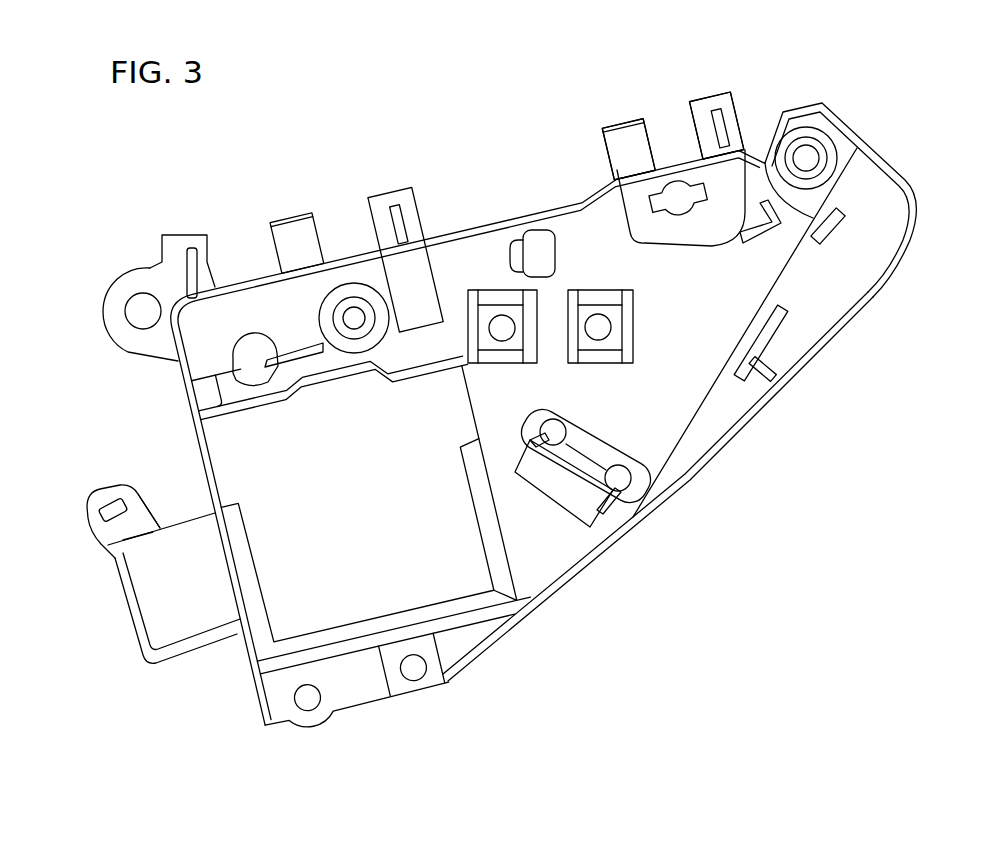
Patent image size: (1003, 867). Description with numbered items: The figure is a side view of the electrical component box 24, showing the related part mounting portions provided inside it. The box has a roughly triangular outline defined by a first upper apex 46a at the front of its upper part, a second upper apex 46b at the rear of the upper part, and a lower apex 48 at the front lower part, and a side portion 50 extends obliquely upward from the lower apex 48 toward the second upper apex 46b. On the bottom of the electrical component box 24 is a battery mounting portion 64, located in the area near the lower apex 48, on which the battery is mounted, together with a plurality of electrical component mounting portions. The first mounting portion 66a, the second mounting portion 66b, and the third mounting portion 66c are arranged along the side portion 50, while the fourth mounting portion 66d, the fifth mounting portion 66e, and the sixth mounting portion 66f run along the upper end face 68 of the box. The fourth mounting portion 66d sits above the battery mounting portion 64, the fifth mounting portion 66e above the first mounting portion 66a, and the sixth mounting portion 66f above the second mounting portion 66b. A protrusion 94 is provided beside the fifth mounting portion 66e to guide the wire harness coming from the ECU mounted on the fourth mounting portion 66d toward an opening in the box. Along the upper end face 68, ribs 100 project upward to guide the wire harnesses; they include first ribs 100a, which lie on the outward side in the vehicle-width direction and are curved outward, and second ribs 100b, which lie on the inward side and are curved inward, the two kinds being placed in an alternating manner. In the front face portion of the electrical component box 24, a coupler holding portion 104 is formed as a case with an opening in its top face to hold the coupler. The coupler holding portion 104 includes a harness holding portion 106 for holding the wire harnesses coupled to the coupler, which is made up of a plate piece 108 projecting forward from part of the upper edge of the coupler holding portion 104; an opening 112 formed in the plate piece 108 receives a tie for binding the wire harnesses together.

The electrical component box 24 is at (149, 153).
The first upper apex 46a is at (172, 319).
The second upper apex 46b is at (916, 188).
The lower apex 48 is at (285, 734).
The side portion 50 is at (732, 445).
The battery mounting portion 64 is at (440, 570).
The first mounting portion 66a is at (593, 497).
The second mounting portion 66b is at (777, 330).
The third mounting portion 66c is at (837, 230).
The fourth mounting portion 66d is at (293, 353).
The fifth mounting portion 66e is at (592, 293).
The sixth mounting portion 66f is at (678, 197).
The upper end face 68 is at (347, 260).
The protrusion 94 is at (518, 237).
The ribs 100 is at (649, 104).
The first rib 100a is at (176, 247).
The second rib 100b is at (288, 232).
The coupler holding portion 104 is at (133, 628).
The harness holding portion 106 is at (120, 478).
The plate piece 108 is at (87, 518).
The opening 112 is at (106, 507).